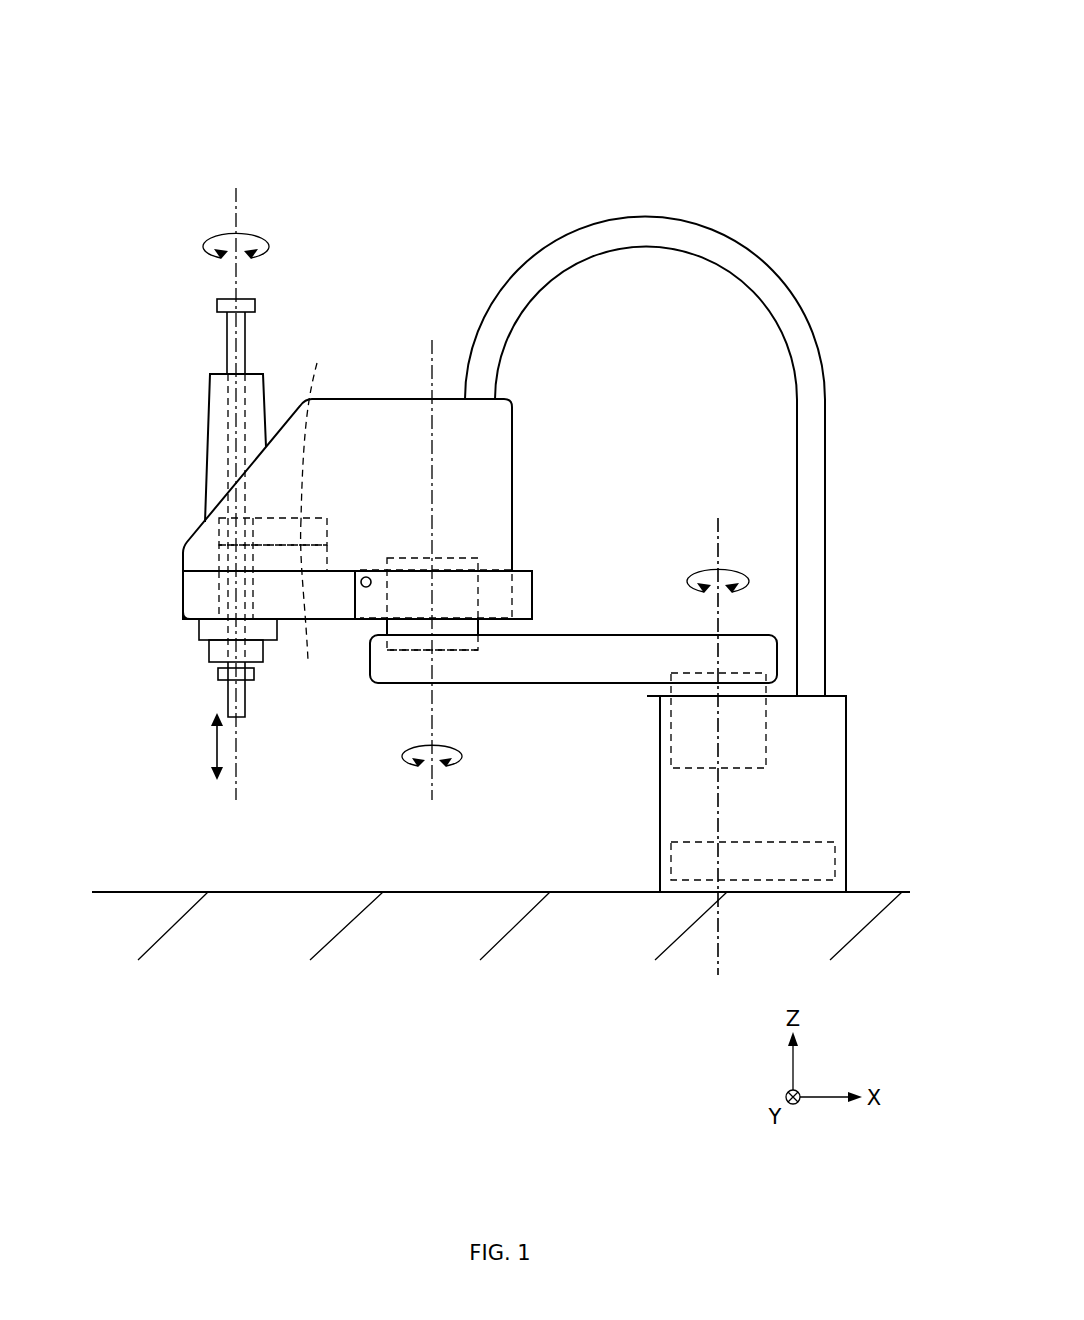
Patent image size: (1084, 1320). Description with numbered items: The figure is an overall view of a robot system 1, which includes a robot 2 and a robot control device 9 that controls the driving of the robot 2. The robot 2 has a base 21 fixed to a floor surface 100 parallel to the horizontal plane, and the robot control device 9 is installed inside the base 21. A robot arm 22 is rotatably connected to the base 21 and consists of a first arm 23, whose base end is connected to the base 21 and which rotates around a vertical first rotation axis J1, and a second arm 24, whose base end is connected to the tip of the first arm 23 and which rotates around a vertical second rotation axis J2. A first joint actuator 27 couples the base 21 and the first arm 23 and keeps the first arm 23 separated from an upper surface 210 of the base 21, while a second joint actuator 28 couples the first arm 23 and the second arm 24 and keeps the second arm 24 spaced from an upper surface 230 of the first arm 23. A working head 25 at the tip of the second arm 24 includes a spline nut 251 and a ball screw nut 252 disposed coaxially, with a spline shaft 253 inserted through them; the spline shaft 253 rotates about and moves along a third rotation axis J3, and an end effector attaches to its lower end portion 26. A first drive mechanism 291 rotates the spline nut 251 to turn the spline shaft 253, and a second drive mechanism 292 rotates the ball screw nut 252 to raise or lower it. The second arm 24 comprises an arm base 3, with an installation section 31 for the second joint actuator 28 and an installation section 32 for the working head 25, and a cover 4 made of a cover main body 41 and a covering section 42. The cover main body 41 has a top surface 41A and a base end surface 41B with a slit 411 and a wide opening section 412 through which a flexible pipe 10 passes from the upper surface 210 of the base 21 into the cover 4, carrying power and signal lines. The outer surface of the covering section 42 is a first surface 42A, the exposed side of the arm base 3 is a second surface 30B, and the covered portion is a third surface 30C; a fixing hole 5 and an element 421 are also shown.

The robot system 1 is at (829, 82).
The robot 2 is at (731, 214).
The arm base 3 is at (195, 594).
The cover 4 is at (412, 417).
The hole 5 is at (363, 576).
The robot control device 9 is at (817, 860).
The flexible pipe 10 is at (519, 273).
The base 21 is at (833, 788).
The robot arm 22 is at (580, 627).
The first arm 23 is at (592, 665).
The second arm 24 is at (358, 432).
The working head 25 is at (200, 431).
The lower end portion 26 is at (228, 712).
The first joint actuator 27 is at (702, 688).
The second joint actuator 28 is at (442, 628).
The second surface 30B is at (263, 606).
The third surface 30C is at (375, 605).
The installation section 31 is at (383, 560).
The installation section 32 is at (213, 597).
The cover main body 41 is at (488, 460).
The top surface 41A is at (390, 398).
The base end surface 41B is at (513, 478).
The covering section 42 is at (498, 588).
The first surface 42A is at (495, 602).
The floor surface 100 is at (498, 892).
The upper surface 210 is at (835, 694).
The upper surface 230 is at (632, 633).
The spline nut 251 is at (233, 533).
The ball screw nut 252 is at (233, 556).
The spline shaft 253 is at (227, 342).
The first drive mechanism 291 is at (315, 429).
The second drive mechanism 292 is at (308, 602).
The slit 411 is at (455, 398).
The wide opening section 412 is at (513, 425).
The flange 421 is at (436, 594).
The first rotation axis J1 is at (718, 735).
The second rotation axis J2 is at (432, 583).
The third rotation axis J3 is at (236, 479).